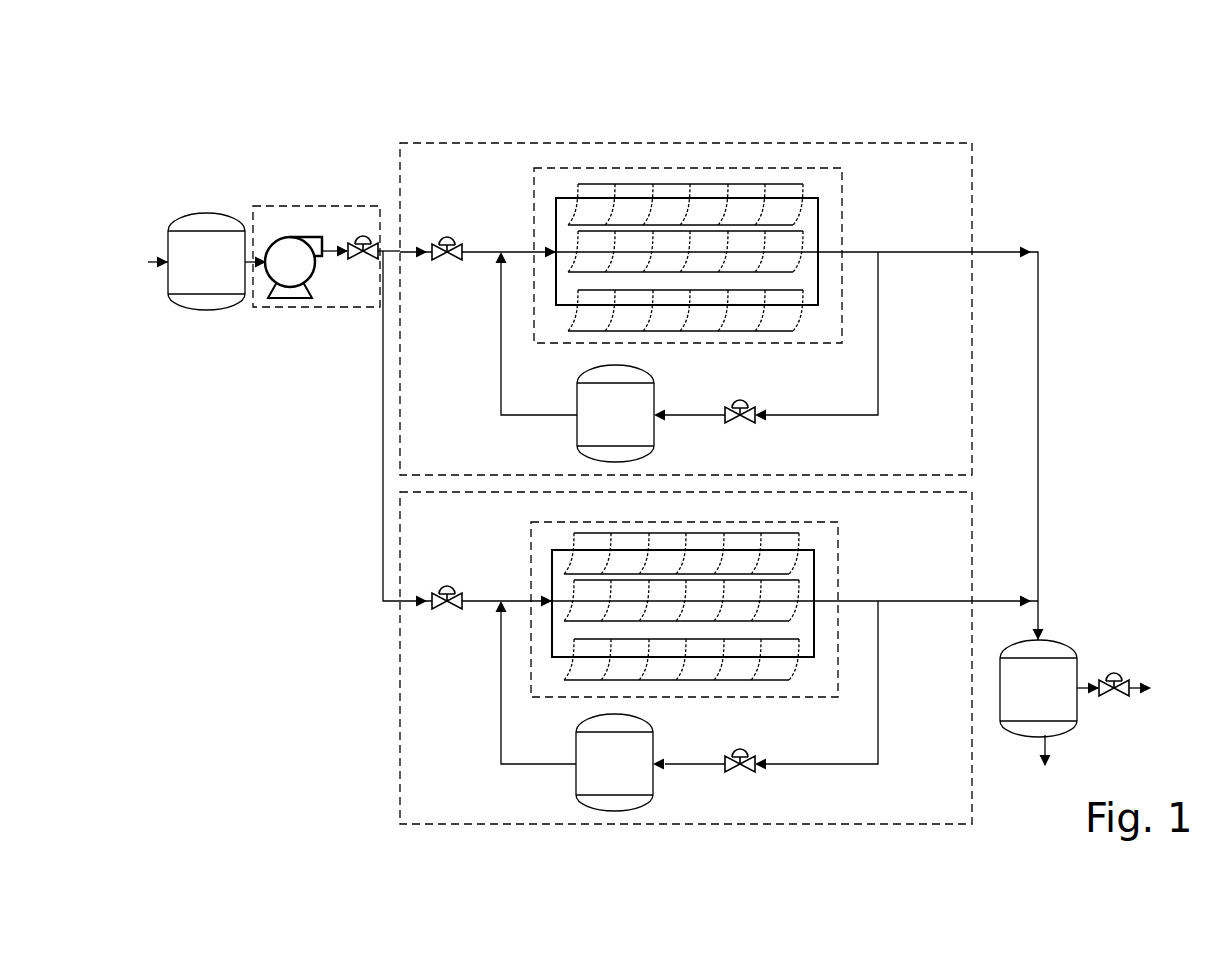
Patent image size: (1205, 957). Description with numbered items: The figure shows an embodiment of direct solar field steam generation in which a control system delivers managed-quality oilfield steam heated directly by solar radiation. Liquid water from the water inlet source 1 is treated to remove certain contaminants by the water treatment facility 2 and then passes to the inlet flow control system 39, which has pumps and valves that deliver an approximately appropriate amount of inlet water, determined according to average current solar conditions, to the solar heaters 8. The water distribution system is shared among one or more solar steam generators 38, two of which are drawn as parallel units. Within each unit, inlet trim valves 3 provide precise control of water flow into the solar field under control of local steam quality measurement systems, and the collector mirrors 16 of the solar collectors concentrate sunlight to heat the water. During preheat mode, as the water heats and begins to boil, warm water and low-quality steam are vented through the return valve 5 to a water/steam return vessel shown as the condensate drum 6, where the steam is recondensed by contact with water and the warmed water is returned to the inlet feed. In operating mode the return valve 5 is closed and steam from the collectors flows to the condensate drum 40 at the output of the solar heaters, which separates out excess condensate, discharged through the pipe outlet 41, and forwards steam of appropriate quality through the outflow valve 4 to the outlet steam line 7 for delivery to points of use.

The water inlet source 1 is at (151, 258).
The water treatment facility 2 is at (191, 213).
The inlet trim valves 3 is at (446, 236).
The outflow valve 4 is at (1105, 673).
The return valve 5 is at (736, 399).
The condensate drum 6 is at (583, 373).
The outlet steam line 7 is at (1140, 680).
The solar heaters 8 is at (674, 428).
The collector mirrors 16 is at (792, 224).
The solar steam generators 38 is at (398, 146).
The inlet flow control system 39 is at (253, 205).
The condensate drum 40 is at (1014, 641).
The pipe outlet 41 is at (1052, 758).